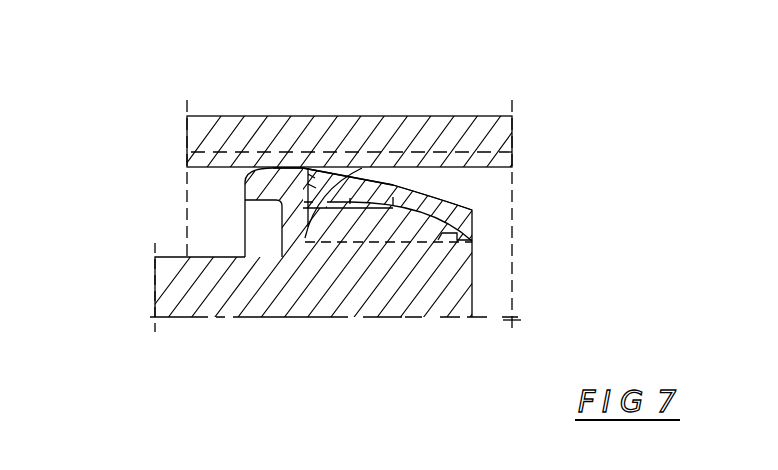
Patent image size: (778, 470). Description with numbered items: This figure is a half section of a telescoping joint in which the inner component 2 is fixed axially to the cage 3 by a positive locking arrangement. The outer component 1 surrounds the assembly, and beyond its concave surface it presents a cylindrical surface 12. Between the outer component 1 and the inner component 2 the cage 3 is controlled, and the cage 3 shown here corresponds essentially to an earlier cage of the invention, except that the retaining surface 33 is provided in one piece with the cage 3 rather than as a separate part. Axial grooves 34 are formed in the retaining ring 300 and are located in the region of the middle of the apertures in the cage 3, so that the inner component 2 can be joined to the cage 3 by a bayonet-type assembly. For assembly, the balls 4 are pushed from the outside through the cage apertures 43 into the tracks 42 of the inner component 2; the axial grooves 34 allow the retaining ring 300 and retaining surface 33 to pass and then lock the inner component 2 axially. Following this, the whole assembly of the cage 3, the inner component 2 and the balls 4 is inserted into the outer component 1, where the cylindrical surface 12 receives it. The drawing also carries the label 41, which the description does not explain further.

The outer component 1 is at (457, 133).
The cylindrical surface 12 is at (511, 152).
The inner component 2 is at (438, 292).
The cage 3 is at (447, 212).
The balls 4 is at (376, 178).
The retaining surface 33 is at (338, 192).
The axial grooves 34 is at (284, 207).
The retaining ring 300 is at (282, 224).
The top contact face 41 is at (281, 153).
The tracks 42 is at (472, 233).
The cage apertures 43 is at (316, 165).